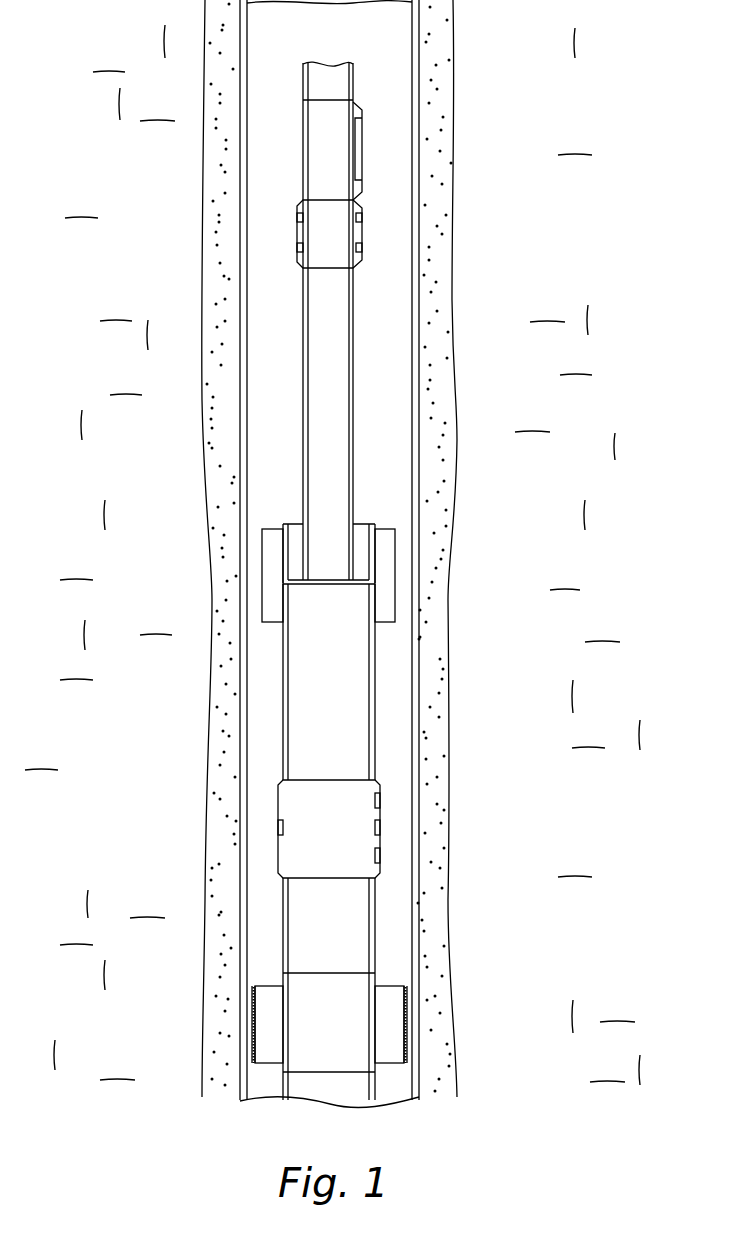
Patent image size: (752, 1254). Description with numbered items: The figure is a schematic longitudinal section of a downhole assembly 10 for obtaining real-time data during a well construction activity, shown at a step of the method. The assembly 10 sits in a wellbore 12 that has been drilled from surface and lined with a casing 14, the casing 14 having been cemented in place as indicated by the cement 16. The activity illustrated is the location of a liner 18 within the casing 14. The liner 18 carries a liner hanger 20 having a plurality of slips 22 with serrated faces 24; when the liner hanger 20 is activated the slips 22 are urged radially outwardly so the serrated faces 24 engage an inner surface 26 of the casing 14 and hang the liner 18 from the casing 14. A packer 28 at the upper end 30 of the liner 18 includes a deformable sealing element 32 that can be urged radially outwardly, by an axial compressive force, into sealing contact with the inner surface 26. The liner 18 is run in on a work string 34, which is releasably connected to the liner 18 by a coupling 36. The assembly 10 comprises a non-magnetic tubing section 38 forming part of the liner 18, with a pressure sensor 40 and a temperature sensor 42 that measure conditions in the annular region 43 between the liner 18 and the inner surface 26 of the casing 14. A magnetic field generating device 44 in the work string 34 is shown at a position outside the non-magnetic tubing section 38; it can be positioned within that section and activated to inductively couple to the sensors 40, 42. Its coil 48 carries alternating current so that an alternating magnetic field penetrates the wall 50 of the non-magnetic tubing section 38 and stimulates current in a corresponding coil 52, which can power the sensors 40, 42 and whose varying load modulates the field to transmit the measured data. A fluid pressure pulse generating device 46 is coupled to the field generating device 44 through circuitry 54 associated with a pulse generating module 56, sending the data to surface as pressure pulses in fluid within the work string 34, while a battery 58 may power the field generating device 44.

The downhole assembly 10 is at (332, 569).
The wellbore 12 is at (452, 463).
The casing 14 is at (412, 665).
The cement 16 is at (445, 590).
The liner 18 is at (272, 710).
The liner hanger 20 is at (334, 989).
The slips 22 is at (327, 1026).
The serrated faces 24 is at (252, 1003).
The inner surface 26 is at (418, 895).
The packer 28 is at (400, 544).
The upper end 30 is at (340, 533).
The deformable sealing element 32 is at (275, 597).
The work string 34 is at (357, 82).
The coupling 36 is at (292, 538).
The non-magnetic tubing section 38 is at (329, 816).
The pressure sensor 40 is at (380, 800).
The temperature sensor 42 is at (380, 856).
The annular region 43 is at (395, 725).
The magnetic field generating device 44 is at (355, 230).
The fluid pressure pulse generating device 46 is at (378, 121).
The coil 48 is at (297, 247).
The wall 50 is at (283, 853).
The coil 52 is at (380, 828).
The circuitry 54 is at (357, 218).
The pulse generating module 56 is at (358, 148).
The battery 58 is at (297, 213).